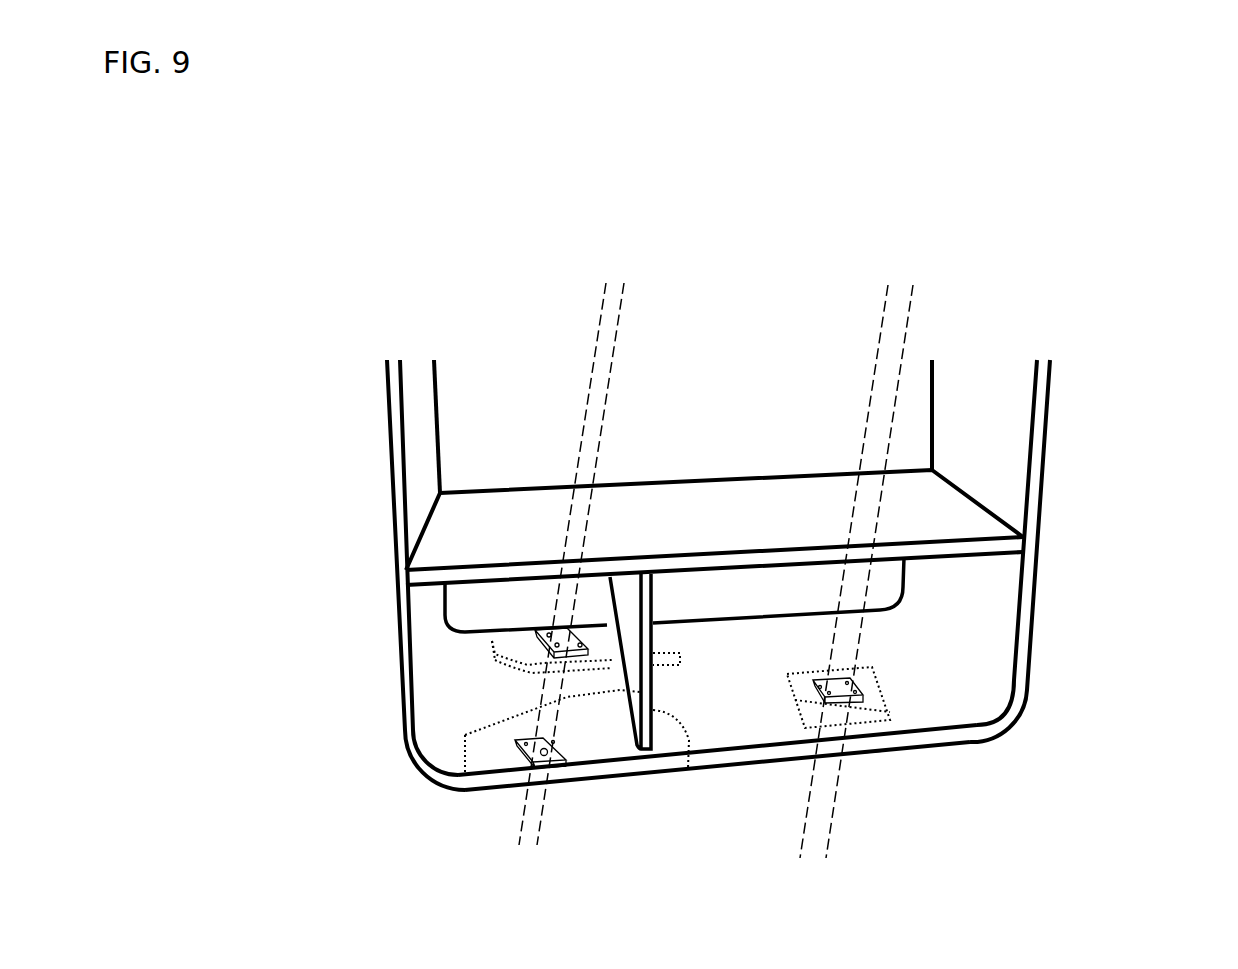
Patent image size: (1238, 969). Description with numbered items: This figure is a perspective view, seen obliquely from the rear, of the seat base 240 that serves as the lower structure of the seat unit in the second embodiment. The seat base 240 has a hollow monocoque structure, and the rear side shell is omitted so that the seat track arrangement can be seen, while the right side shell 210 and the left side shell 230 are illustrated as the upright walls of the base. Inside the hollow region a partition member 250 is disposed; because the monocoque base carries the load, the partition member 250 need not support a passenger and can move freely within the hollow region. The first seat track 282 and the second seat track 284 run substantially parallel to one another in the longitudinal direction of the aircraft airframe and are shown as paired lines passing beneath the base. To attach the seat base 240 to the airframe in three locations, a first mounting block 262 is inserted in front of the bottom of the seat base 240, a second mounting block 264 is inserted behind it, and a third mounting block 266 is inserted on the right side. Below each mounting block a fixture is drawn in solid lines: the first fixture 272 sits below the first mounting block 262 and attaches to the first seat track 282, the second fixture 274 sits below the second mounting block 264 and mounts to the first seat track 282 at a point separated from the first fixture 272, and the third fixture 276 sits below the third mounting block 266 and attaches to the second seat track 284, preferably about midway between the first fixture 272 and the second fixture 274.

The right side shell 210 is at (1043, 413).
The left side shell 230 is at (388, 432).
The seat base 240 is at (1023, 680).
The partition member 250 is at (653, 712).
The first mounting block 262 is at (537, 637).
The second mounting block 264 is at (498, 745).
The third mounting block 266 is at (875, 683).
The first fixture 272 is at (532, 628).
The second fixture 274 is at (560, 768).
The third fixture 276 is at (872, 752).
The first seat track 282 is at (607, 363).
The second seat track 284 is at (890, 337).